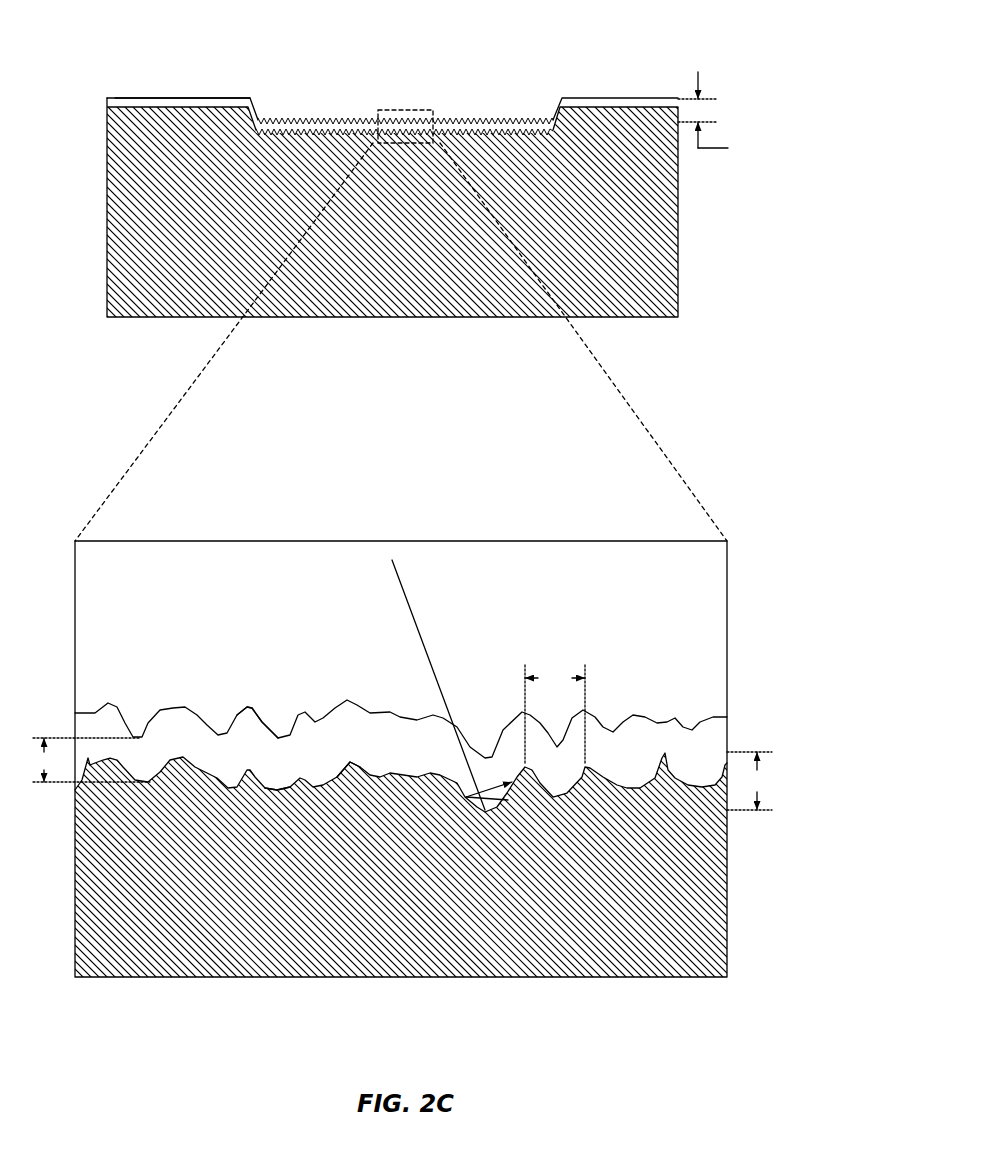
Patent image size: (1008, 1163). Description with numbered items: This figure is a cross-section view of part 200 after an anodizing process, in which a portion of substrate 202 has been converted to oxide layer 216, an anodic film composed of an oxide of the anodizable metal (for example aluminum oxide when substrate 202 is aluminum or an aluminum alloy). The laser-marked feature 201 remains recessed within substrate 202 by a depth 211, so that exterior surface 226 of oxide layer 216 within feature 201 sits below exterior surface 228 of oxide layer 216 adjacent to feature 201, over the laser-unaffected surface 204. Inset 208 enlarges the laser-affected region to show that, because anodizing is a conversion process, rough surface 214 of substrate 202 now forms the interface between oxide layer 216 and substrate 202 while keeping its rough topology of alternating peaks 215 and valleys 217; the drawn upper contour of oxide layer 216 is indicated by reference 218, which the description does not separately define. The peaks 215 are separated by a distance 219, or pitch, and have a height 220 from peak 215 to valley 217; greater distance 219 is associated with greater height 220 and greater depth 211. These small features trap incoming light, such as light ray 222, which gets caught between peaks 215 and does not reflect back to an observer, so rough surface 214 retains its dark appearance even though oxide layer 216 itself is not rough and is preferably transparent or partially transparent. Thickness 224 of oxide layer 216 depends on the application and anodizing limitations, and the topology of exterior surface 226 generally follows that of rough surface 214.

The part 200 is at (418, 493).
The feature 201 is at (404, 93).
The substrate 202 is at (423, 232).
The surface 204 is at (176, 97).
The inset 208 is at (400, 109).
The depth 211 is at (719, 115).
The rough surface 214 is at (188, 751).
The peaks 215 is at (350, 761).
The oxide layer 216 is at (612, 97).
The valleys 217 is at (288, 796).
The coating top surface 218 is at (267, 712).
The distance 219 is at (555, 715).
The height 220 is at (750, 781).
The light ray 222 is at (410, 612).
The thickness 224 is at (91, 760).
The exterior surface 226 is at (330, 119).
The exterior surface 228 is at (232, 97).